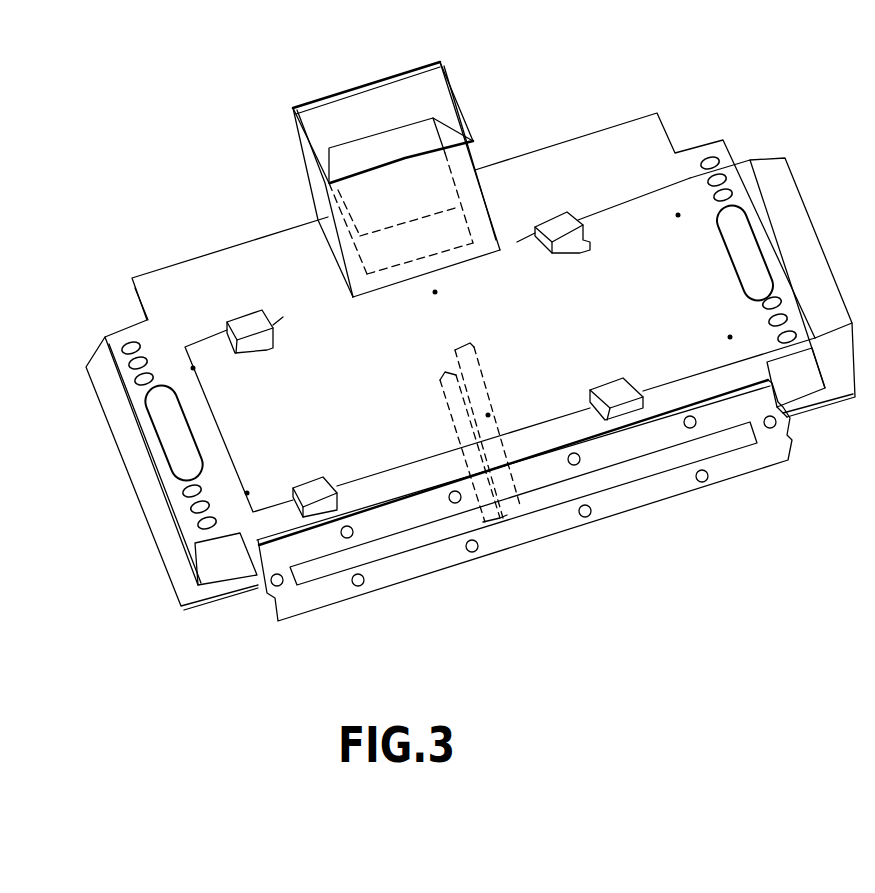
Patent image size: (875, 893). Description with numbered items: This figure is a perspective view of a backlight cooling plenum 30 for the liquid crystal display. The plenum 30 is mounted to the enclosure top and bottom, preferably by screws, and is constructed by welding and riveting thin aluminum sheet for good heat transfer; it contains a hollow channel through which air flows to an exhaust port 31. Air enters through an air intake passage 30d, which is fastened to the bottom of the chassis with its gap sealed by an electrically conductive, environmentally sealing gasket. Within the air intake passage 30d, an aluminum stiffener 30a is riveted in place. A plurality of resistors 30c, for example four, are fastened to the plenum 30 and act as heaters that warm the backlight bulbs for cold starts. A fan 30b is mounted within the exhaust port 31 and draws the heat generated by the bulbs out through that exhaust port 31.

The backlight cooling plenum 30 is at (178, 288).
The stiffener 30a is at (507, 517).
The fan 30b is at (427, 140).
The resistors 30c is at (572, 218).
The air intake passage 30d is at (695, 447).
The exhaust port 31 is at (422, 165).